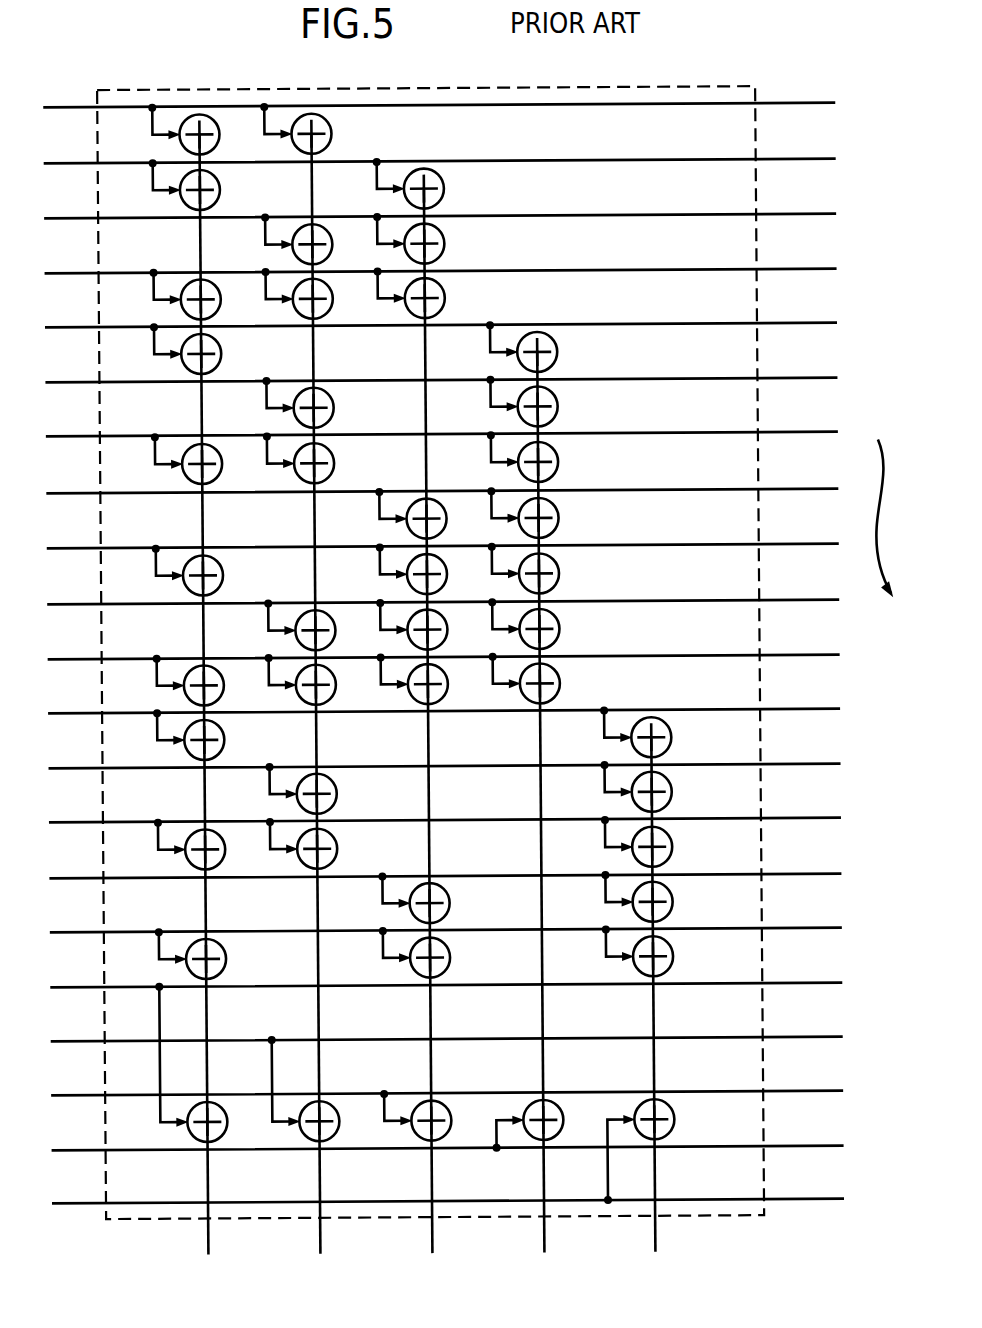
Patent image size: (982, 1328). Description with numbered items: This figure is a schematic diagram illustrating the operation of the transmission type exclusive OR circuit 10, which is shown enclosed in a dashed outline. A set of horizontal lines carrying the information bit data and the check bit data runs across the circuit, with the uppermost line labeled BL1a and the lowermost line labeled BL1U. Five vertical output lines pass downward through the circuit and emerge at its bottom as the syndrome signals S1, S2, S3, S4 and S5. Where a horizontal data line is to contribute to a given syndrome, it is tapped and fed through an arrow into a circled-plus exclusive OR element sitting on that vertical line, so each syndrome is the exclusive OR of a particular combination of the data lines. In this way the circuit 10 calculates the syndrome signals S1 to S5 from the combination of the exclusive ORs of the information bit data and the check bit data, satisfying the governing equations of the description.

The transmission type exclusive OR circuit 10 is at (619, 88).
The bit line BL1a is at (465, 105).
The bit line BL1U is at (479, 1191).
The syndrome signal S1 is at (204, 1242).
The syndrome signal S2 is at (316, 1242).
The syndrome signal S3 is at (428, 1242).
The syndrome signal S4 is at (539, 1242).
The syndrome signal S5 is at (650, 1242).